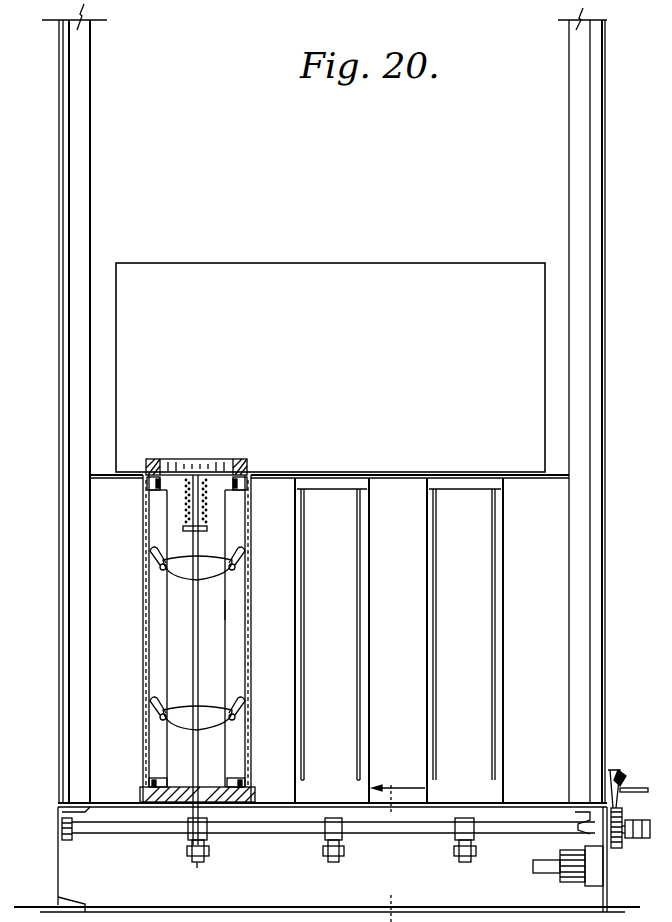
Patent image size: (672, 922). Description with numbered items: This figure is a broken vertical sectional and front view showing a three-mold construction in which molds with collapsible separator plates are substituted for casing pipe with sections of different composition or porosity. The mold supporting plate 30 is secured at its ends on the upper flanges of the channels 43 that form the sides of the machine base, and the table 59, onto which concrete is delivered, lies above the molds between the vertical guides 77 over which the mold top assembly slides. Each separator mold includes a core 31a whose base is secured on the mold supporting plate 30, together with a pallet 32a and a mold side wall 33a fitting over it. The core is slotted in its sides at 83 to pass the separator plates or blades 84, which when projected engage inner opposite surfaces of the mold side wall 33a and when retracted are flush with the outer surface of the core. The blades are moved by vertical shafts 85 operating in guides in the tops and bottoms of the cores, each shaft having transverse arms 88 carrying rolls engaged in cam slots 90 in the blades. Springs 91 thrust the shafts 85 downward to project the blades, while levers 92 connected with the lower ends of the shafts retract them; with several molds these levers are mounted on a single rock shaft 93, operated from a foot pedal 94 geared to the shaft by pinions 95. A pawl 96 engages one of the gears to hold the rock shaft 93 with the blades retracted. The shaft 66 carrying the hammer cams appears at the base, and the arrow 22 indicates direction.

The direction arrow 22 is at (398, 846).
The mold supporting plate 30 is at (535, 792).
The core 31a is at (250, 487).
The pallet 32a is at (141, 796).
The mold side wall 33a is at (250, 612).
The channels 43 is at (57, 868).
The table 59 is at (547, 478).
The shaft 66 is at (546, 873).
The vertical guides 77 is at (86, 195).
The slots 83 is at (492, 596).
The separator plates or blades 84 is at (150, 661).
The vertical shafts 85 is at (200, 668).
The transverse arms 88 is at (185, 572).
The cam slots 90 is at (240, 556).
The springs 91 is at (206, 519).
The levers 92 is at (198, 862).
The rock shaft 93 is at (275, 832).
The foot pedal 94 is at (640, 818).
The pinions 95 is at (648, 790).
The pawl 96 is at (622, 776).